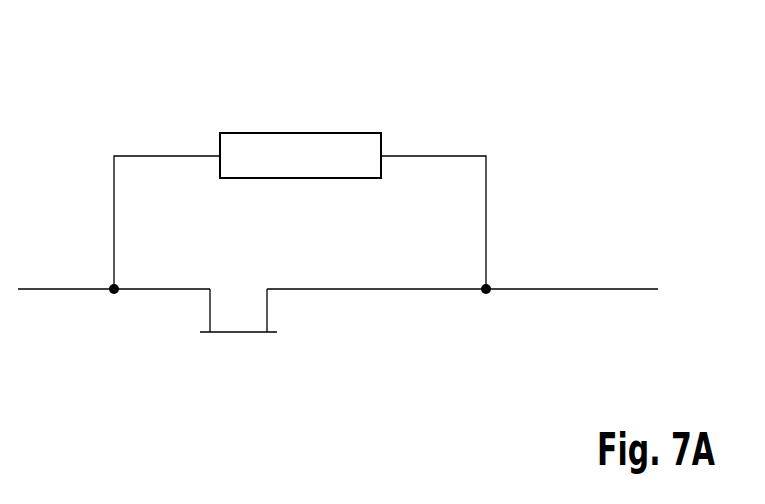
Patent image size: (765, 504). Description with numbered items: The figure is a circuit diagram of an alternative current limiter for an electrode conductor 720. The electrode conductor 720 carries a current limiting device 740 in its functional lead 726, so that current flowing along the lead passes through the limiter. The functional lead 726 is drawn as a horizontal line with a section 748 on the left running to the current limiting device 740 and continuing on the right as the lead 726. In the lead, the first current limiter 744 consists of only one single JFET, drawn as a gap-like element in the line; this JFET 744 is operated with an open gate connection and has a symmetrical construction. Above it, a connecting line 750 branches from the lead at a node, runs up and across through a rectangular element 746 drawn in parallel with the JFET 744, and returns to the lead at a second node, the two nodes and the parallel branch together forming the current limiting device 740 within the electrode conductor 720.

The electrode conductor 720 is at (570, 125).
The functional lead 726 is at (608, 287).
The current limiting device 740 is at (228, 100).
The first current limiter 744 is at (268, 358).
The resistor 746 is at (303, 133).
The conductor line section 748 is at (144, 292).
The connecting line 750 is at (114, 186).